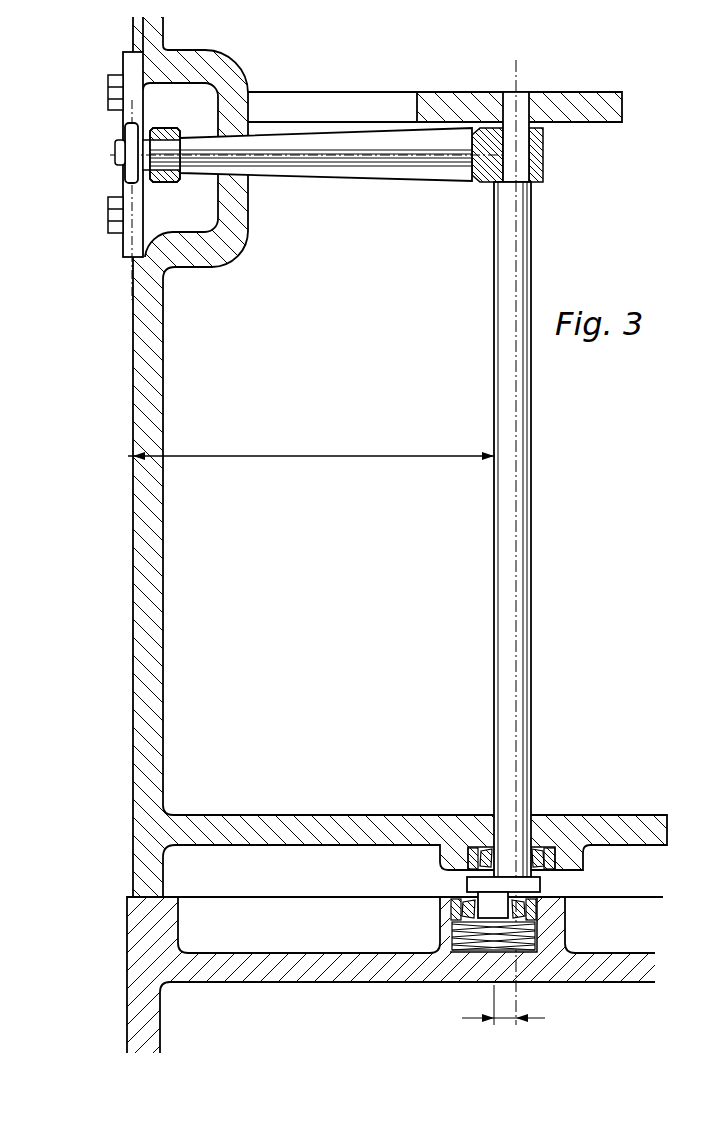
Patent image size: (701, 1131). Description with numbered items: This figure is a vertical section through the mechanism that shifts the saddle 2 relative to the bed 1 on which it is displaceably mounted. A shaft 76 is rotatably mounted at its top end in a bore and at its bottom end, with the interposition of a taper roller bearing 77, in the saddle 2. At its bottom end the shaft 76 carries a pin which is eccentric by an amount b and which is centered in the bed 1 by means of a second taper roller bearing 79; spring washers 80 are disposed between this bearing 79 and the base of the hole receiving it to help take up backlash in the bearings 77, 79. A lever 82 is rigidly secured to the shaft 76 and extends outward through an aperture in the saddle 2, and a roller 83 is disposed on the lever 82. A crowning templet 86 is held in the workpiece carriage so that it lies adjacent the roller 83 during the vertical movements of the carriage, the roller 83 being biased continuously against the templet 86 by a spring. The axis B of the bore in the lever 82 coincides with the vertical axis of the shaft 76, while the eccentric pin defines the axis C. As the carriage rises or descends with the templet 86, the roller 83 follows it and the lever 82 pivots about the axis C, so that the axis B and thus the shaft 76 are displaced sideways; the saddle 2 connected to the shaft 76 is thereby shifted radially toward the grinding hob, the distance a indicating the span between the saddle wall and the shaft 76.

The bed 1 is at (127, 963).
The saddle 2 is at (132, 693).
The shaft 76 is at (530, 620).
The taper roller bearing 77 is at (540, 876).
The taper roller bearing 79 is at (535, 908).
The spring washers 80 is at (537, 932).
The lever 82 is at (390, 178).
The roller 83 is at (122, 137).
The crowning templet 86 is at (133, 67).
The distance a is at (311, 447).
The eccentricity amount b is at (503, 1005).
The axis of the bore in the lever B is at (513, 525).
The pivot axis C is at (495, 527).